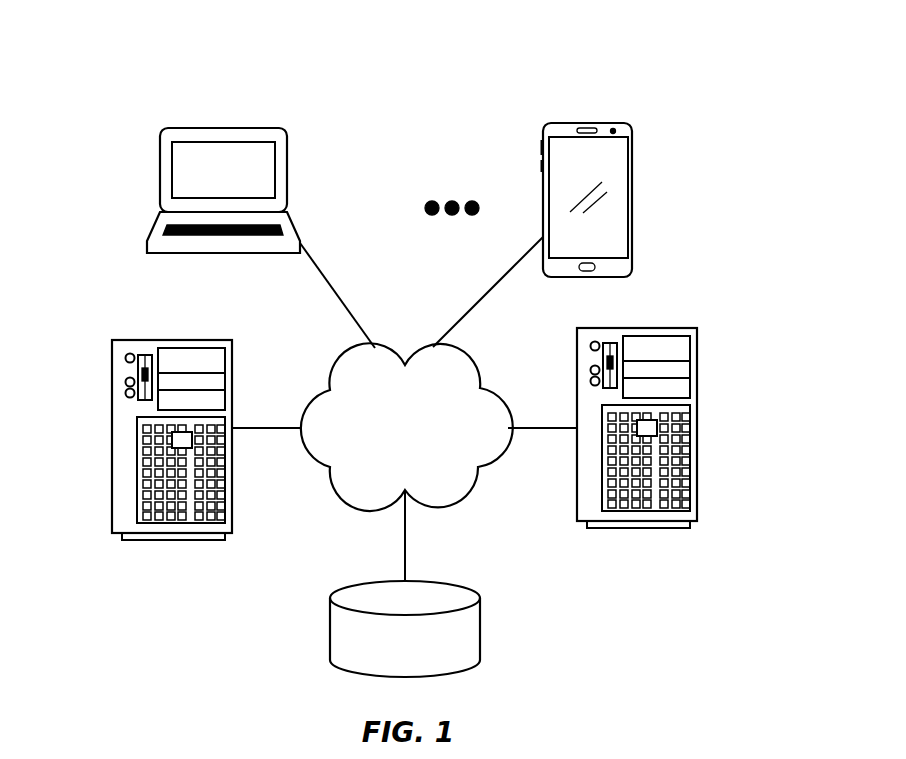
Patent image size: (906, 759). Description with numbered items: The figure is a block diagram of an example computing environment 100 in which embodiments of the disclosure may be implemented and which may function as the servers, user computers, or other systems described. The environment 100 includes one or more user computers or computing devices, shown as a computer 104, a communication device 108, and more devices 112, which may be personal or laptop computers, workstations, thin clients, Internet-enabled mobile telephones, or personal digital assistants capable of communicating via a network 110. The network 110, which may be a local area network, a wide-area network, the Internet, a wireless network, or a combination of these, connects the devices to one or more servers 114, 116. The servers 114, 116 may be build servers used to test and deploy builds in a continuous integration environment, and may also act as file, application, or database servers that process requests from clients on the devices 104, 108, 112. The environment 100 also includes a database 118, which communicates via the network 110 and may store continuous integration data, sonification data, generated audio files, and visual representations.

The computing environment 100 is at (681, 75).
The computer 104 is at (160, 175).
The communication device 108 is at (632, 200).
The network 110 is at (453, 502).
The more devices 112 is at (452, 203).
The server 114 is at (112, 428).
The server 116 is at (697, 427).
The database 118 is at (480, 627).